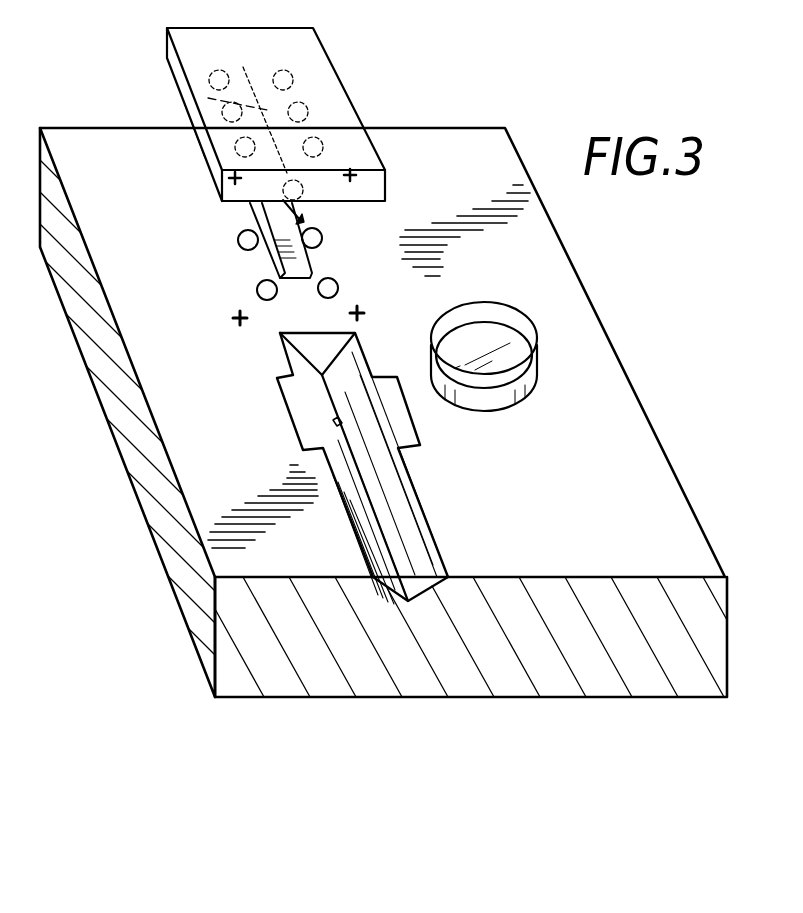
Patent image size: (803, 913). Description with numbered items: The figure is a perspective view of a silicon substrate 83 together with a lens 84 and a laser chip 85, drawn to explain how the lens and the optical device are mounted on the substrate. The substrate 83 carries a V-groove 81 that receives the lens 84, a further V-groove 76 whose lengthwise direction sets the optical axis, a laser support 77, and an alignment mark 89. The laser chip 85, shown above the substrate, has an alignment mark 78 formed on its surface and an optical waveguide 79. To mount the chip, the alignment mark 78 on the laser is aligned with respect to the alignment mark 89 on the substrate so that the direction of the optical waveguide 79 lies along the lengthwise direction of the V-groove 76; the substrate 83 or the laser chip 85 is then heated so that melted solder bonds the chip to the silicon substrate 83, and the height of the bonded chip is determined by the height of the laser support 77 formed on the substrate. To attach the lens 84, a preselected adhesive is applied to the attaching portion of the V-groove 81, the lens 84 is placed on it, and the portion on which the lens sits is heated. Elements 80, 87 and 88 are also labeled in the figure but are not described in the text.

The V-groove 76 is at (345, 492).
The laser support 77 is at (278, 252).
The alignment mark 78 is at (357, 173).
The optical waveguide 79 is at (267, 110).
The cover plate 80 is at (163, 55).
The V-groove 81 is at (283, 402).
The silicon substrate 83 is at (322, 638).
The lens 84 is at (520, 398).
The laser chip 85 is at (290, 52).
The side edge of cover plate 87 is at (197, 132).
The ball 88 is at (322, 240).
The alignment mark 89 is at (365, 313).